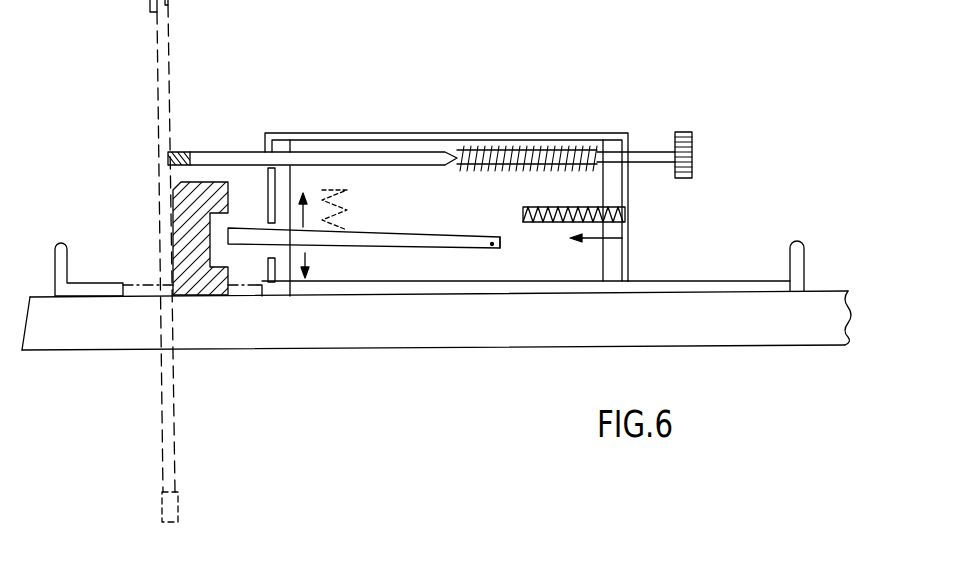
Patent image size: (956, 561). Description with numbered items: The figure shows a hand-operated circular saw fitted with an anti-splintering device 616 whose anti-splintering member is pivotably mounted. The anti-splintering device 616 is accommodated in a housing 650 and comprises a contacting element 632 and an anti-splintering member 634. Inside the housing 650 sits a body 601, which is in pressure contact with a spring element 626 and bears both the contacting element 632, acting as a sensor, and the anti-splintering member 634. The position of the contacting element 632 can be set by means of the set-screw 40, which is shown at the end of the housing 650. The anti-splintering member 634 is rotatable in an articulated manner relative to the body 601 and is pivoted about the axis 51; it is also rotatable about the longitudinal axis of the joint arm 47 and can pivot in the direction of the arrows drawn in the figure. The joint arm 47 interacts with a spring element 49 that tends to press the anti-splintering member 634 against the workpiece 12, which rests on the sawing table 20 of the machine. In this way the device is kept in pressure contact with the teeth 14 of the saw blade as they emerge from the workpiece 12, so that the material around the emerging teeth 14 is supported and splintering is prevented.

The workpiece 12 is at (791, 328).
The teeth 14 is at (178, 505).
The sawing table 20 is at (805, 246).
The set-screw 40 is at (692, 137).
The joint arm 47 is at (437, 224).
The spring element 49 is at (347, 194).
The axis 51 is at (500, 249).
The body 601 is at (586, 186).
The anti-splintering device 616 is at (580, 72).
The spring element 626 is at (629, 220).
The contacting element 632 is at (180, 147).
The anti-splintering member 634 is at (208, 180).
The housing 650 is at (413, 133).